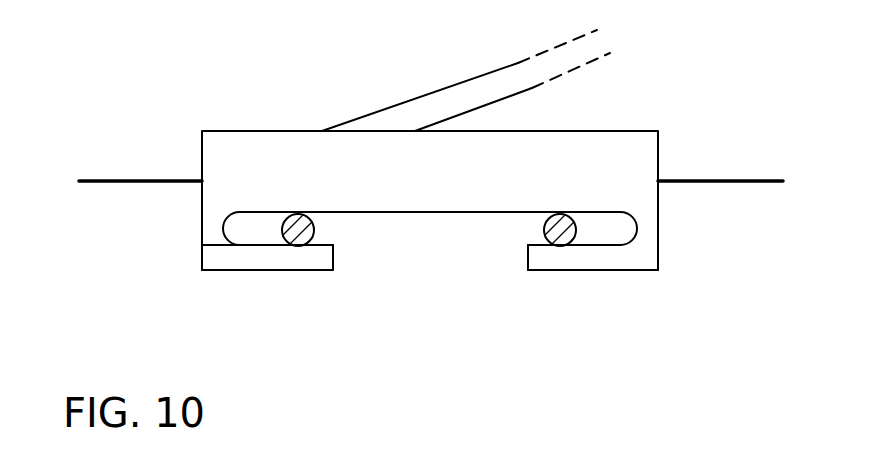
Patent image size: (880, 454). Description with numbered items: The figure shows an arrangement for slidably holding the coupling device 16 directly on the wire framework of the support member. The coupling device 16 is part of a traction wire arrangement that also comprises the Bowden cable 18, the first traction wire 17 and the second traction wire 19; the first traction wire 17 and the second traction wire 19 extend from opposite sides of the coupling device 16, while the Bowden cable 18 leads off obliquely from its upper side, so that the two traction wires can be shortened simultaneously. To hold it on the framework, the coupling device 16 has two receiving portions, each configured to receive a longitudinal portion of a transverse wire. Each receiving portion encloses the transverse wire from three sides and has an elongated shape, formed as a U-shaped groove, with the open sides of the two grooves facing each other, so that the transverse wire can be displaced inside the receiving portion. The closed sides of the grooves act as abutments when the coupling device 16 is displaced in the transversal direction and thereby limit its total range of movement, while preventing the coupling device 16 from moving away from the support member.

The coupling device 16 is at (621, 131).
The first traction wire 17 is at (730, 181).
The Bowden cable 18 is at (409, 110).
The second traction wire 19 is at (128, 181).